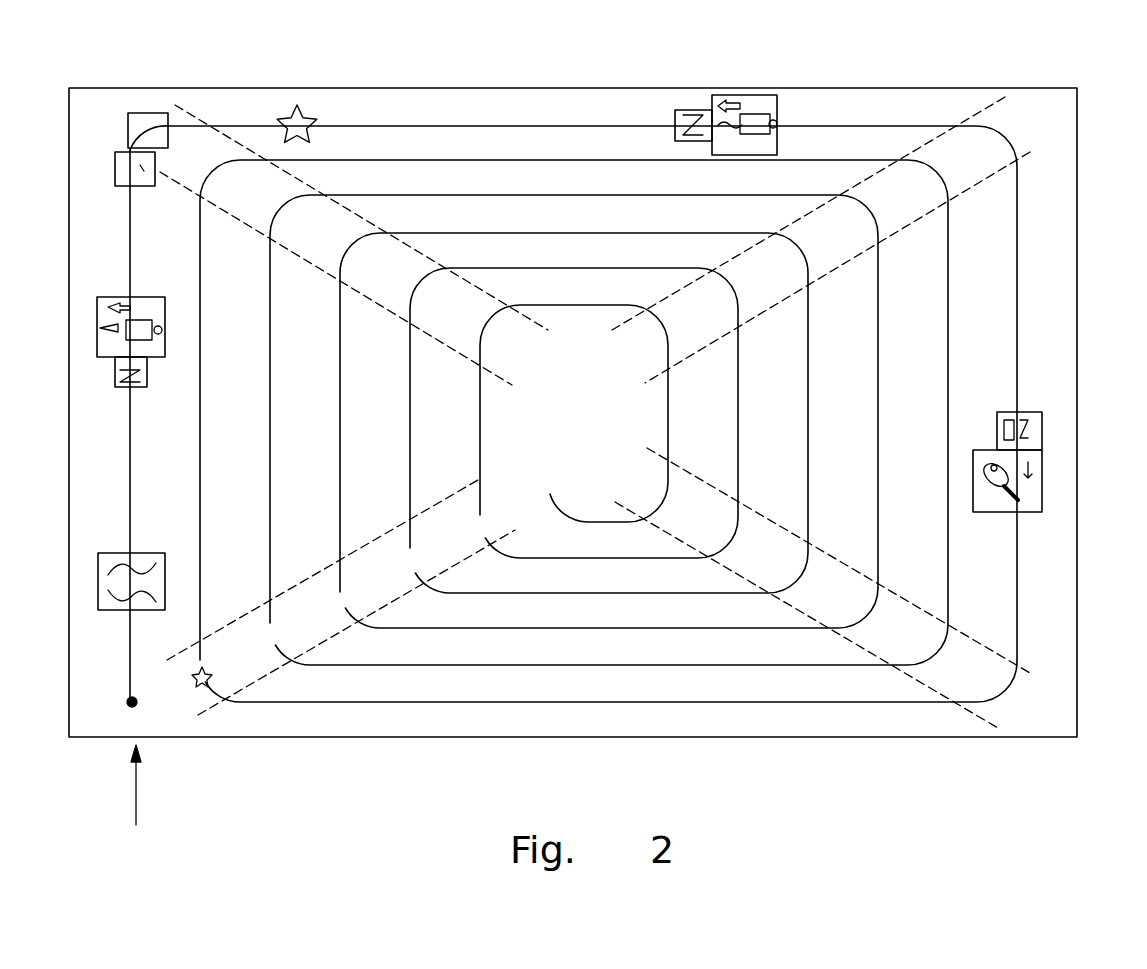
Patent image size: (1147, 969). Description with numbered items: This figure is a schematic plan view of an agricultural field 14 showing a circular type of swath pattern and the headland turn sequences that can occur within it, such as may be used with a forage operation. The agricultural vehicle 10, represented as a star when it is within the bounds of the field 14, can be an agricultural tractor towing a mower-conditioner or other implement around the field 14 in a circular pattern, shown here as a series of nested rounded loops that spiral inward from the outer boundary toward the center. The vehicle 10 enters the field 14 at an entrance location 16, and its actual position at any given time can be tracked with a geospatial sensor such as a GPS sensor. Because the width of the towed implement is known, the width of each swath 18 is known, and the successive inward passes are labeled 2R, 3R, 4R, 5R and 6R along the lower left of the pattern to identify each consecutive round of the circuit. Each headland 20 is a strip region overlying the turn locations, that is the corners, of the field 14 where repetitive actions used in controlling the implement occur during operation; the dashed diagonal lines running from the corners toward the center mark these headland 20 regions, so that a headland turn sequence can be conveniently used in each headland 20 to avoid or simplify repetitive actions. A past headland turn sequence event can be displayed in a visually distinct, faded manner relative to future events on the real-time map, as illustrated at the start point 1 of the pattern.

The starting point 1 is at (116, 434).
The agricultural vehicle 10 is at (305, 110).
The agricultural field 14 is at (850, 88).
The entrance location 16 is at (137, 800).
The swath 18 is at (948, 334).
The headland 20 is at (573, 412).
The second ring 2R is at (573, 414).
The third ring 3R is at (574, 412).
The fourth ring 4R is at (574, 411).
The fifth ring 5R is at (574, 413).
The sixth ring 6R is at (574, 413).